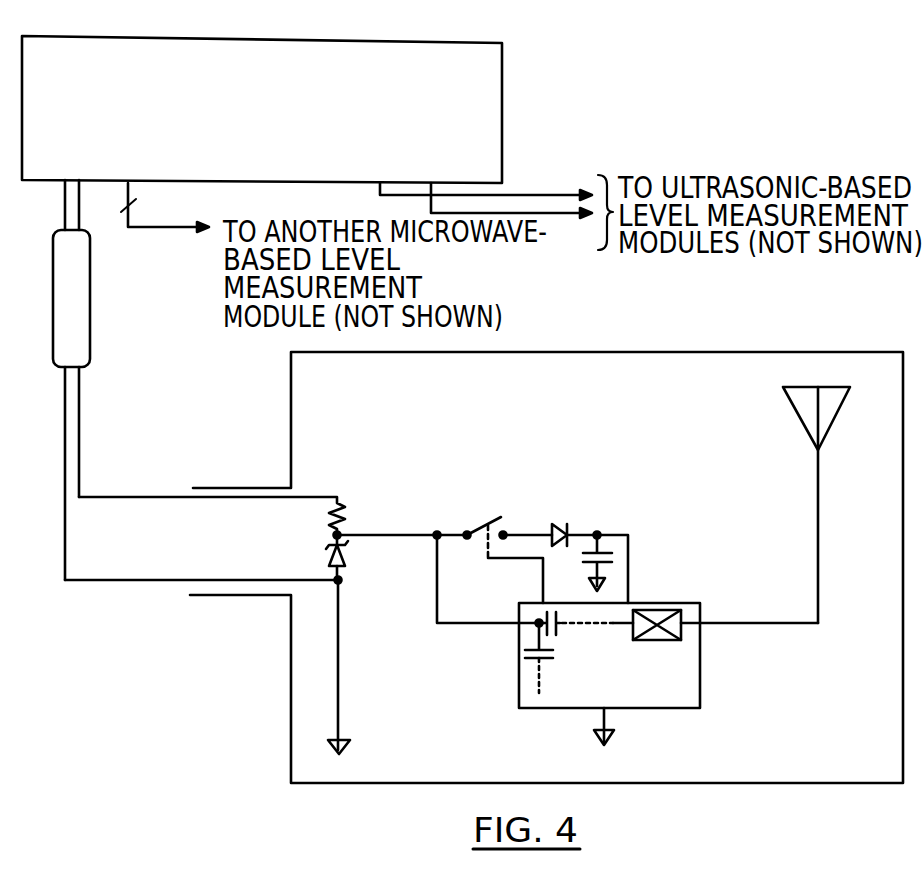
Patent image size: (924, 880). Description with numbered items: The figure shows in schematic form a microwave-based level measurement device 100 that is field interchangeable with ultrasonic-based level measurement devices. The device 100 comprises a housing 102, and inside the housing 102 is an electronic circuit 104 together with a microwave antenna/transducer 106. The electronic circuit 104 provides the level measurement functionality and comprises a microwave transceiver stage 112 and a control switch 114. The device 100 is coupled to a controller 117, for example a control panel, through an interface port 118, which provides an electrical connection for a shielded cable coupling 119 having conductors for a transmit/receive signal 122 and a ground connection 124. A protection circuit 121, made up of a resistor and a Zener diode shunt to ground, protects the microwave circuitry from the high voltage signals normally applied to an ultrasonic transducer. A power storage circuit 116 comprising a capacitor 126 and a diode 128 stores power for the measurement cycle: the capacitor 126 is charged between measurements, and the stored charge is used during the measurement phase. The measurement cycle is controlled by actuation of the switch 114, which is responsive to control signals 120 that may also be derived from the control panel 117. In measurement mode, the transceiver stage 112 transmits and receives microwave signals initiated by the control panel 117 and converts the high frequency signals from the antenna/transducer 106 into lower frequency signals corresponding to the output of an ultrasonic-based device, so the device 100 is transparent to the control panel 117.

The microwave-based level measurement device 100 is at (805, 125).
The housing 102 is at (690, 352).
The electronic circuit 104 is at (536, 432).
The microwave antenna/transducer 106 is at (783, 393).
The microwave transceiver stage 112 is at (682, 603).
The control switch 114 is at (487, 522).
The power storage circuit 116 is at (630, 480).
The controller 117 is at (512, 88).
The interface port 118 is at (165, 596).
The shielded cable coupling 119 is at (78, 318).
The control signals 120 is at (505, 562).
The protection circuit 121 is at (308, 538).
The transmit/receive signal 122 is at (383, 529).
The ground connection 124 is at (317, 587).
The capacitor 126 is at (630, 537).
The diode 128 is at (560, 523).